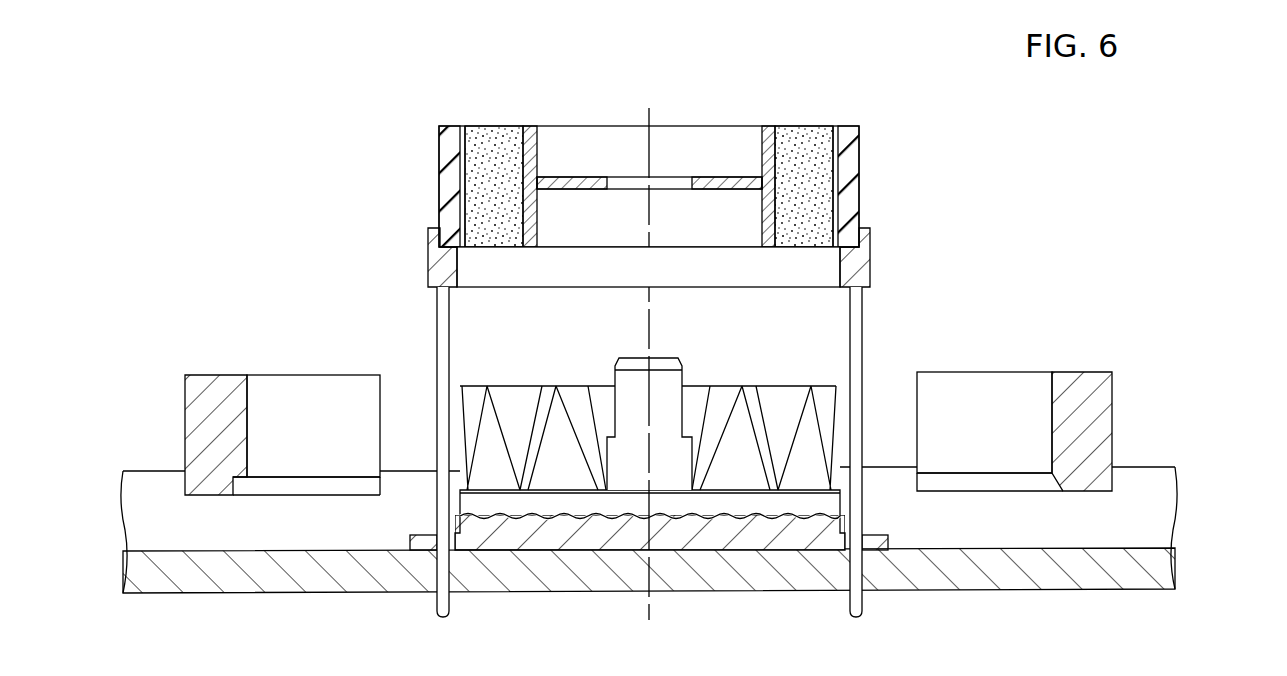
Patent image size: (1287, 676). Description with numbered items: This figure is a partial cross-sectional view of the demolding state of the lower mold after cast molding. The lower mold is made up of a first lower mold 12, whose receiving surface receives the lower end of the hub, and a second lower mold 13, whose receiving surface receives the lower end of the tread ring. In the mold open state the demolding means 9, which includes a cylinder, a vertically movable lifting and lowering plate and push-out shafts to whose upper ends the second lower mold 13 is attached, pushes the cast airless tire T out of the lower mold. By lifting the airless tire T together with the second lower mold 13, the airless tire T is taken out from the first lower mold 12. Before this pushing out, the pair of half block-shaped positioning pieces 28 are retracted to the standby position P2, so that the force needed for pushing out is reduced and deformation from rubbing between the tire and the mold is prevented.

The demolding means 9 is at (435, 338).
The first lower mold 12 is at (767, 503).
The second lower mold 13 is at (872, 252).
The positioning pieces 28 is at (1080, 373).
The airless tire T is at (907, 127).
The standby position P2 is at (1153, 392).